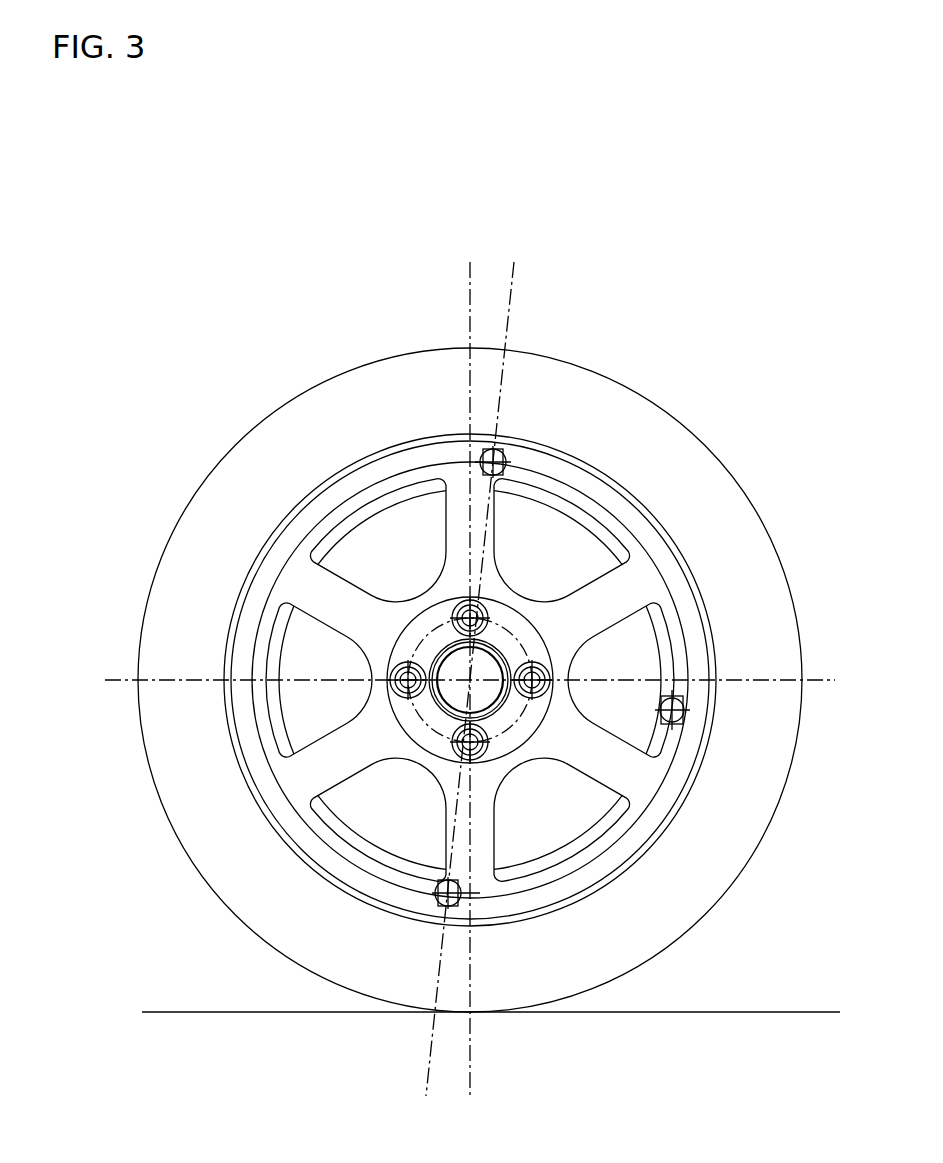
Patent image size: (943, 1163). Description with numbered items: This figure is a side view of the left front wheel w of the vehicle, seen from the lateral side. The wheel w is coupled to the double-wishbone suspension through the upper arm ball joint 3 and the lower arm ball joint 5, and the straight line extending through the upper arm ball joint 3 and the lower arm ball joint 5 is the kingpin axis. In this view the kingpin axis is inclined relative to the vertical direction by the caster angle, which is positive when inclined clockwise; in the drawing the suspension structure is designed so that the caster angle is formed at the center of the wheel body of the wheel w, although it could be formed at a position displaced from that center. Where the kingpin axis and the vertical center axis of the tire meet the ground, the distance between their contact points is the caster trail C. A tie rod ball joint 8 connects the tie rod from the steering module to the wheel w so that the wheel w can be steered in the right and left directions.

The wheel W is at (664, 404).
The upper arm ball joint 3 is at (500, 456).
The lower arm ball joint 5 is at (438, 904).
The tie rod ball joint 8 is at (682, 722).
The caster trail C is at (435, 1012).